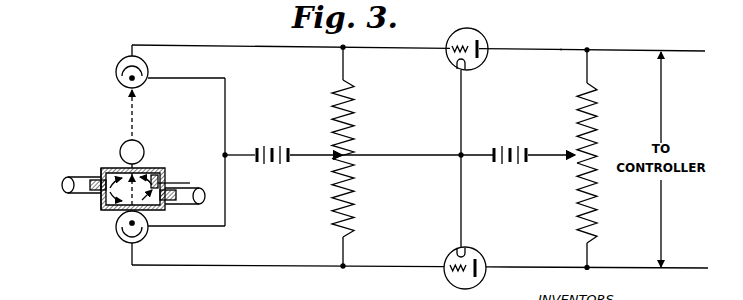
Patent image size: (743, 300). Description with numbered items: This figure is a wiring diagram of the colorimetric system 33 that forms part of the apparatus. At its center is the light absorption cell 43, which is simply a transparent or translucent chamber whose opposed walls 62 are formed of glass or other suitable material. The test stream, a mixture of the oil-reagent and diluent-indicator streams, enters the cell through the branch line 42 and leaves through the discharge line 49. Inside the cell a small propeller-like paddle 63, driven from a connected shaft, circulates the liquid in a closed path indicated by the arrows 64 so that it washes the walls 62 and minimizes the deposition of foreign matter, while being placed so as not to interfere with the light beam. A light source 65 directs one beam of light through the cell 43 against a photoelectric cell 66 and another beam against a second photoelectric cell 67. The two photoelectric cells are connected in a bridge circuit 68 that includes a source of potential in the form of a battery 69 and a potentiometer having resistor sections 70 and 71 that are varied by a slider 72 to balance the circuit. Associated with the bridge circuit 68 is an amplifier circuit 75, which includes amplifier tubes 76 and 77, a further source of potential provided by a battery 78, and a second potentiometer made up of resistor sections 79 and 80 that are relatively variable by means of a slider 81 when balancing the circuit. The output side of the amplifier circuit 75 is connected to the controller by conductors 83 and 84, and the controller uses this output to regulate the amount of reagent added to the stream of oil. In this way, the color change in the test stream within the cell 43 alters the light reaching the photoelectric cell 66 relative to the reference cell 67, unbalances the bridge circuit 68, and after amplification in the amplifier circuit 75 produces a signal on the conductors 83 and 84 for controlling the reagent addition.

The colorimetric system 33 is at (98, 115).
The branch line 42 is at (62, 184).
The light absorption cell 43 is at (99, 200).
The discharge line 49 is at (205, 195).
The opposed walls 62 is at (113, 169).
The propeller-like paddle 63 is at (153, 174).
The arrows 64 is at (108, 211).
The light source 65 is at (140, 145).
The photoelectric cell 66 is at (120, 240).
The second photoelectric cell 67 is at (118, 62).
The bridge circuit 68 is at (190, 43).
The battery 69 is at (270, 147).
The resistor section 70 is at (356, 202).
The resistor section 71 is at (356, 122).
The slider 72 is at (334, 156).
The amplifier circuit 75 is at (548, 46).
The amplifier tube 76 is at (481, 256).
The amplifier tube 77 is at (481, 63).
The battery 78 is at (507, 147).
The resistor section 79 is at (597, 210).
The resistor section 80 is at (597, 115).
The slider 81 is at (570, 160).
The conductor 83 is at (692, 268).
The conductor 84 is at (697, 52).